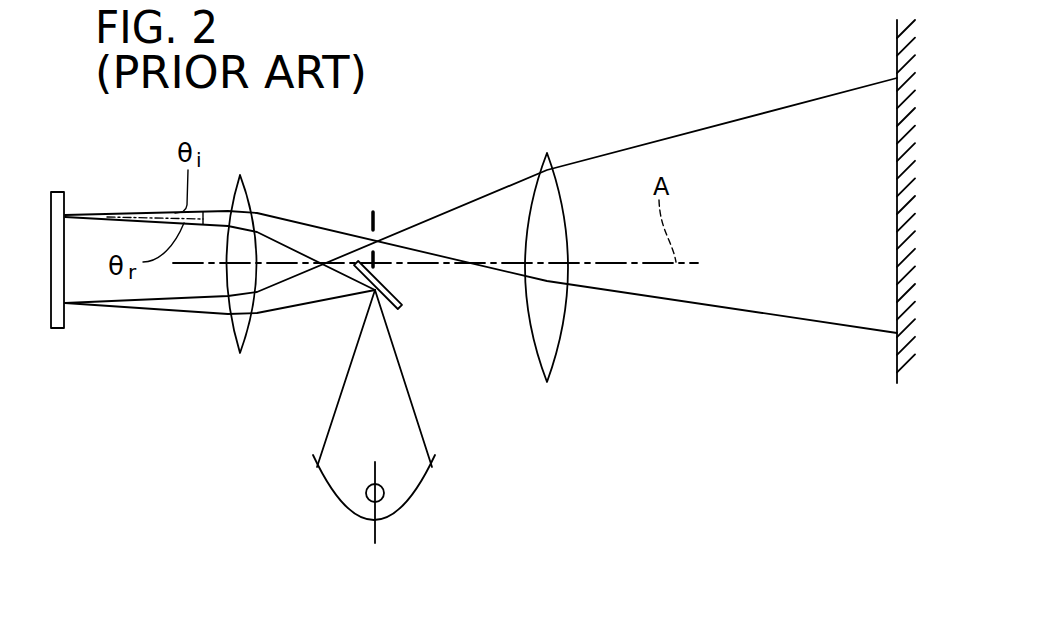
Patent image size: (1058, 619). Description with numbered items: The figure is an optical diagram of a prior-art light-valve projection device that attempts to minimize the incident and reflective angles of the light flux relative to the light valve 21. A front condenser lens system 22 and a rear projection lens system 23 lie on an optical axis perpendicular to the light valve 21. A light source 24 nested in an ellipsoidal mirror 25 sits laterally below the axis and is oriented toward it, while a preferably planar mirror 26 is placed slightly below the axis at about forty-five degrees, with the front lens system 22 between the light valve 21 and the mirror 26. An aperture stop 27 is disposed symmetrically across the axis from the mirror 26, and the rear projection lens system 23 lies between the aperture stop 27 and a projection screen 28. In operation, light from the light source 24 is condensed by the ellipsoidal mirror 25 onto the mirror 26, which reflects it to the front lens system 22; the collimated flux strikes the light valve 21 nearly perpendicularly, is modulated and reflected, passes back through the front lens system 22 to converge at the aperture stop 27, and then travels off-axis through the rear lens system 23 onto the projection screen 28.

The light valve 21 is at (64, 252).
The front condenser lens system 22 is at (240, 227).
The rear projection lens system 23 is at (562, 337).
The light source 24 is at (384, 493).
The ellipsoidal mirror 25 is at (318, 468).
The mirror 26 is at (397, 288).
The aperture stop 27 is at (368, 221).
The projection screen 28 is at (897, 190).